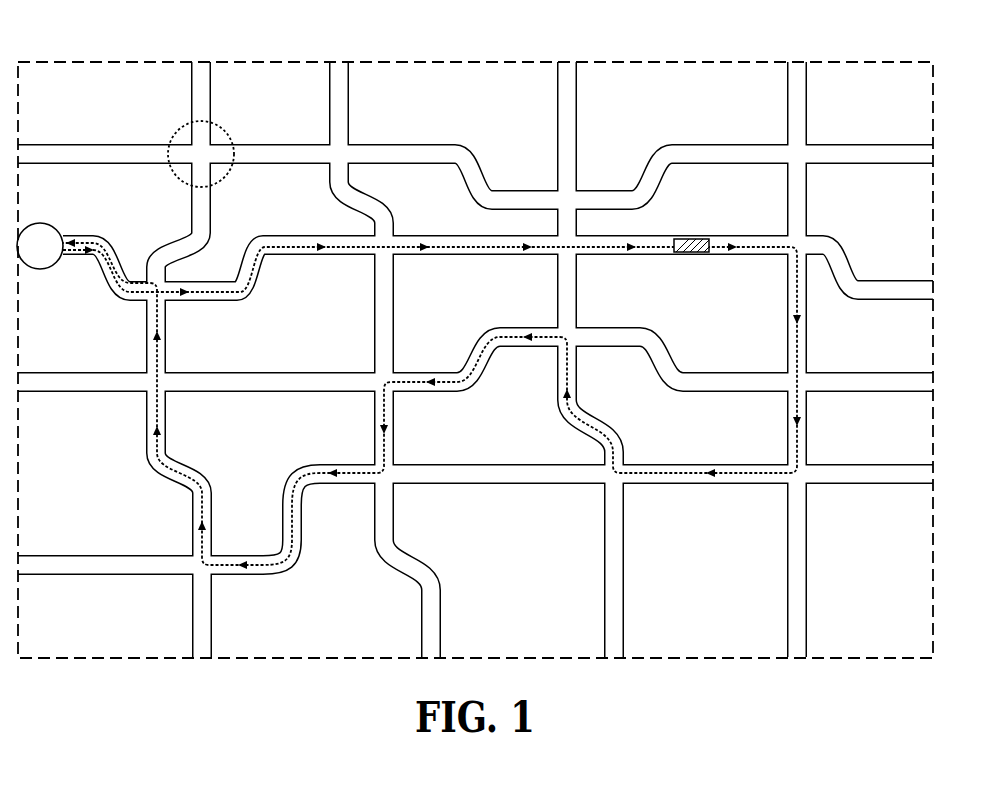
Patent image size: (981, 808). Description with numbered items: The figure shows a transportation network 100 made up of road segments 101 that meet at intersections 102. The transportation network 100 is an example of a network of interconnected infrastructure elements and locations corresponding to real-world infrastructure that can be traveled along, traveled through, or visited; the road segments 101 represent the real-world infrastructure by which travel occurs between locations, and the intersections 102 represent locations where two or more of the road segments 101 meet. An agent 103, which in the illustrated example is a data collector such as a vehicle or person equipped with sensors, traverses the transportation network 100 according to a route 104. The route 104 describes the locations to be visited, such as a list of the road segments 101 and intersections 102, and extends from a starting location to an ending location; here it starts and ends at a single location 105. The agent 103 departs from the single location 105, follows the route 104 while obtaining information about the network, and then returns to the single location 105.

The transportation network 100 is at (114, 51).
The road segments 101 is at (416, 145).
The intersections 102 is at (225, 129).
The agent 103 is at (701, 238).
The route 104 is at (795, 337).
The single location 105 is at (50, 224).